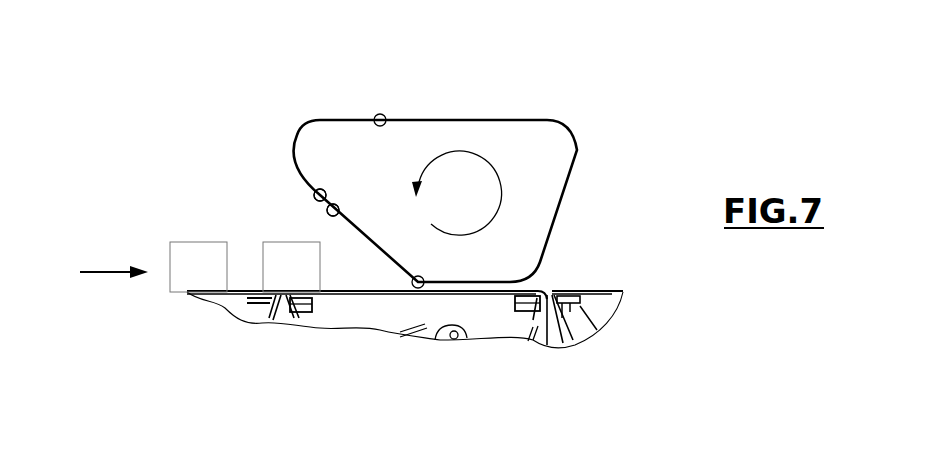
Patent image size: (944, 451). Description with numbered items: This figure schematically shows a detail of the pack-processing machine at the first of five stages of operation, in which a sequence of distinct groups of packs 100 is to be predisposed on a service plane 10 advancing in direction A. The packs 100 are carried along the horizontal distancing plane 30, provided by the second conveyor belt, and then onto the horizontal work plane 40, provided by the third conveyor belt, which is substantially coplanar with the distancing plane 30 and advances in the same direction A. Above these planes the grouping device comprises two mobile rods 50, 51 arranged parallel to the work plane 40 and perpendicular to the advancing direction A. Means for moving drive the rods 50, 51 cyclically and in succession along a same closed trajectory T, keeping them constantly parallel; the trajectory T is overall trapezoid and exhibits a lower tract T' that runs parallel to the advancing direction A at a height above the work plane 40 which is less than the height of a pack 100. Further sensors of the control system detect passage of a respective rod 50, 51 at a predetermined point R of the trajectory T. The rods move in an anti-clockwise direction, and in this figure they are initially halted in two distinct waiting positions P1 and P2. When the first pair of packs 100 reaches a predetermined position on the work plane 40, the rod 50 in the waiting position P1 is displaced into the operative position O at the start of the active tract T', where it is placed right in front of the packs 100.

The closed trajectory T is at (440, 148).
The lower tract of the trajectory T' is at (544, 233).
The predetermined point of the trajectory R is at (380, 114).
The mobile rod 51 is at (319, 189).
The waiting position P2 is at (313, 196).
The mobile rod 50 is at (338, 203).
The waiting position P1 is at (333, 217).
The operative position O is at (430, 393).
The service plane 10 is at (614, 285).
The pack 100 is at (187, 258).
The distancing plane 30 is at (216, 284).
The work plane 40 is at (327, 302).
The advancing direction A is at (114, 257).